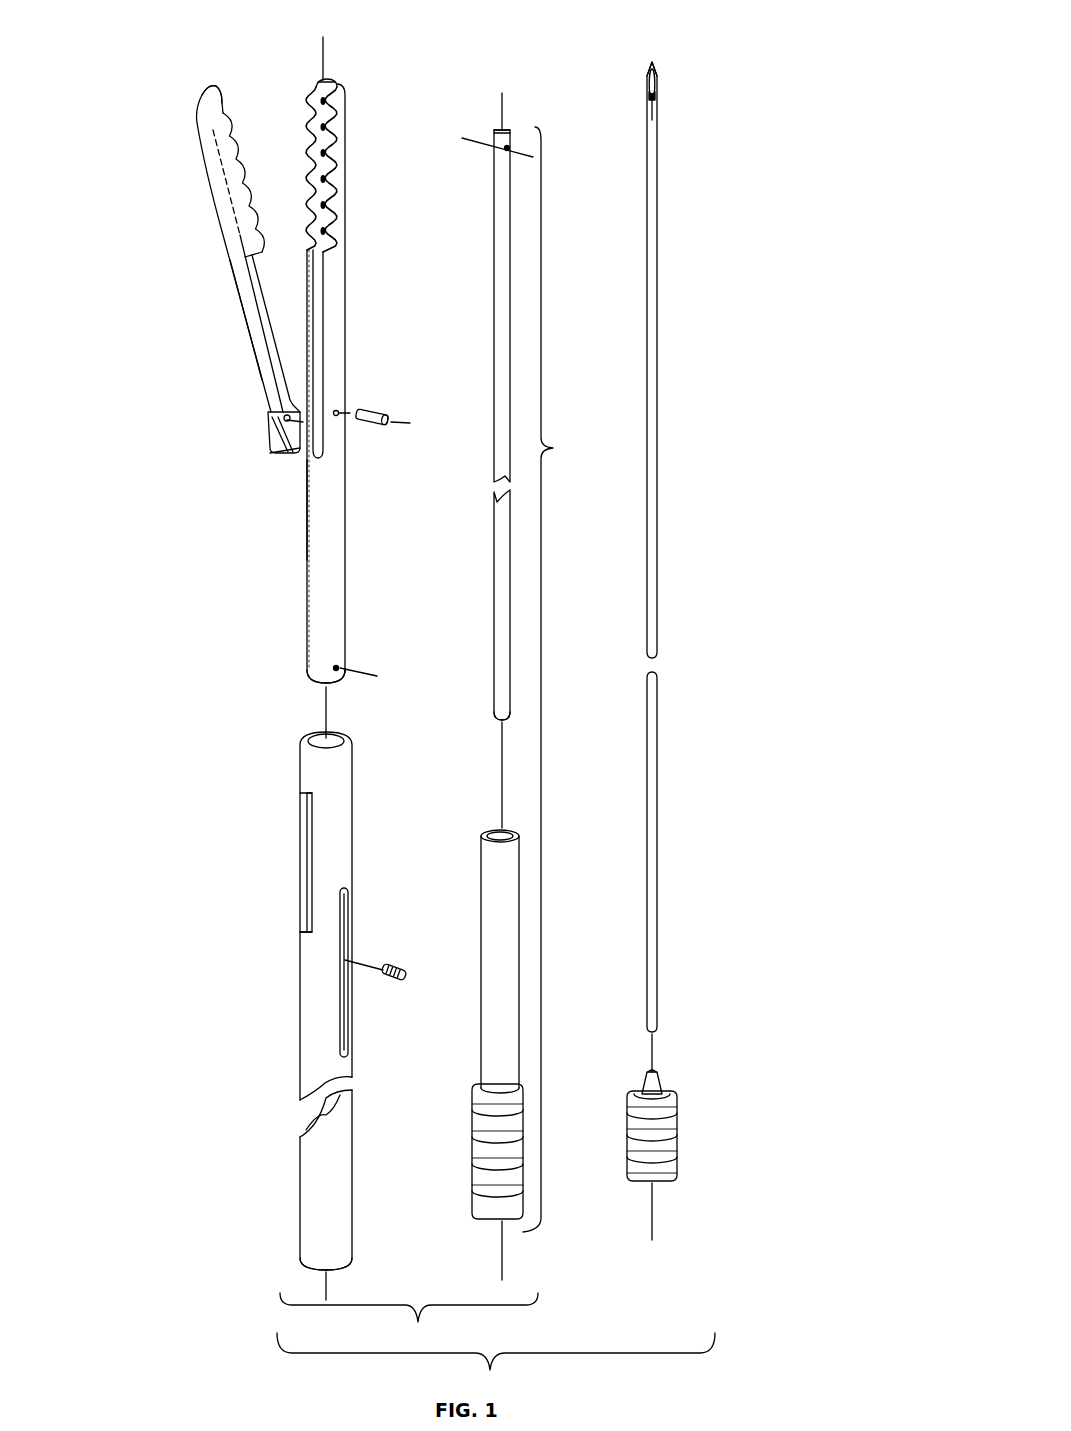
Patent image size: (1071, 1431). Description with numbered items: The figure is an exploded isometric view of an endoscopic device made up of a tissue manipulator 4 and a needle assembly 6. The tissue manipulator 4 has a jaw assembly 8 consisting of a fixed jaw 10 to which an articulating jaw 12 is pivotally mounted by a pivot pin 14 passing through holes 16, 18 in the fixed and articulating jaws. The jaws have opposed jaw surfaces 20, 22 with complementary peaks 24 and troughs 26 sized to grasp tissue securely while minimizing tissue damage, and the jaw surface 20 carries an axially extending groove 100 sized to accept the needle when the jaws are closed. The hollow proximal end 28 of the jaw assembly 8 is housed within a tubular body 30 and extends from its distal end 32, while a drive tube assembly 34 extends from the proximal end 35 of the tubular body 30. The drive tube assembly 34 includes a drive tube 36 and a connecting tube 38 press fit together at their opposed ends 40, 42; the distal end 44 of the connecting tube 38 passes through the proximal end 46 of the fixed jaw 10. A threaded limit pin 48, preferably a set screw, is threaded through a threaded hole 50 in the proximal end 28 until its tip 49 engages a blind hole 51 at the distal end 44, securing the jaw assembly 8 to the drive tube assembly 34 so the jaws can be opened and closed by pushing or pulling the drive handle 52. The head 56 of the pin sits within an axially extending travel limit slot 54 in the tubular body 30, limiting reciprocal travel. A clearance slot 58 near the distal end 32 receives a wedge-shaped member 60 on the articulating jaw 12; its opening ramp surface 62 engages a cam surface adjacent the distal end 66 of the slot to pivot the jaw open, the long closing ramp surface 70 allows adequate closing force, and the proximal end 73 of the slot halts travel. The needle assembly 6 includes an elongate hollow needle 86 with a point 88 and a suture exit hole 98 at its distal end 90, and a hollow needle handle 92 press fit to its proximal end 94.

The tissue manipulator 4 is at (496, 1331).
The needle assembly 6 is at (673, 393).
The jaw assembly 8 is at (354, 94).
The fixed jaw 10 is at (350, 298).
The articulating jaw 12 is at (212, 212).
The pivot pin 14 is at (387, 412).
The hole 16 is at (339, 411).
The hole 18 is at (277, 412).
The jaw surface 20 is at (307, 110).
The jaw surface 22 is at (220, 107).
The peaks 24 is at (309, 148).
The troughs 26 is at (315, 188).
The proximal end 28 is at (303, 542).
The tubular body 30 is at (298, 1030).
The distal end 32 is at (298, 750).
The drive tube assembly 34 is at (556, 679).
The proximal end 35 is at (298, 1236).
The drive tube 36 is at (480, 1046).
The connecting tube 38 is at (494, 548).
The end 40 is at (480, 843).
The end 42 is at (493, 707).
The distal end 44 is at (493, 160).
The proximal end 46 is at (303, 665).
The threaded limit pin 48 is at (396, 966).
The tip 49 is at (383, 976).
The threaded hole 50 is at (340, 668).
The blind hole 51 is at (509, 146).
The drive handle 52 is at (475, 1183).
The travel limit slot 54 is at (345, 917).
The head 56 is at (404, 983).
The clearance slot 58 is at (306, 862).
The wedge-shaped member 60 is at (273, 457).
The opening ramp surface 62 is at (267, 437).
The distal end 66 is at (300, 793).
The closing ramp surface 70 is at (240, 323).
The proximal end 73 is at (300, 932).
The elongate hollow needle 86 is at (658, 340).
The point 88 is at (655, 64).
The distal end 90 is at (657, 122).
The hollow needle handle 92 is at (680, 1115).
The proximal end 94 is at (658, 930).
The suture exit hole 98 is at (650, 104).
The groove 100 is at (327, 90).